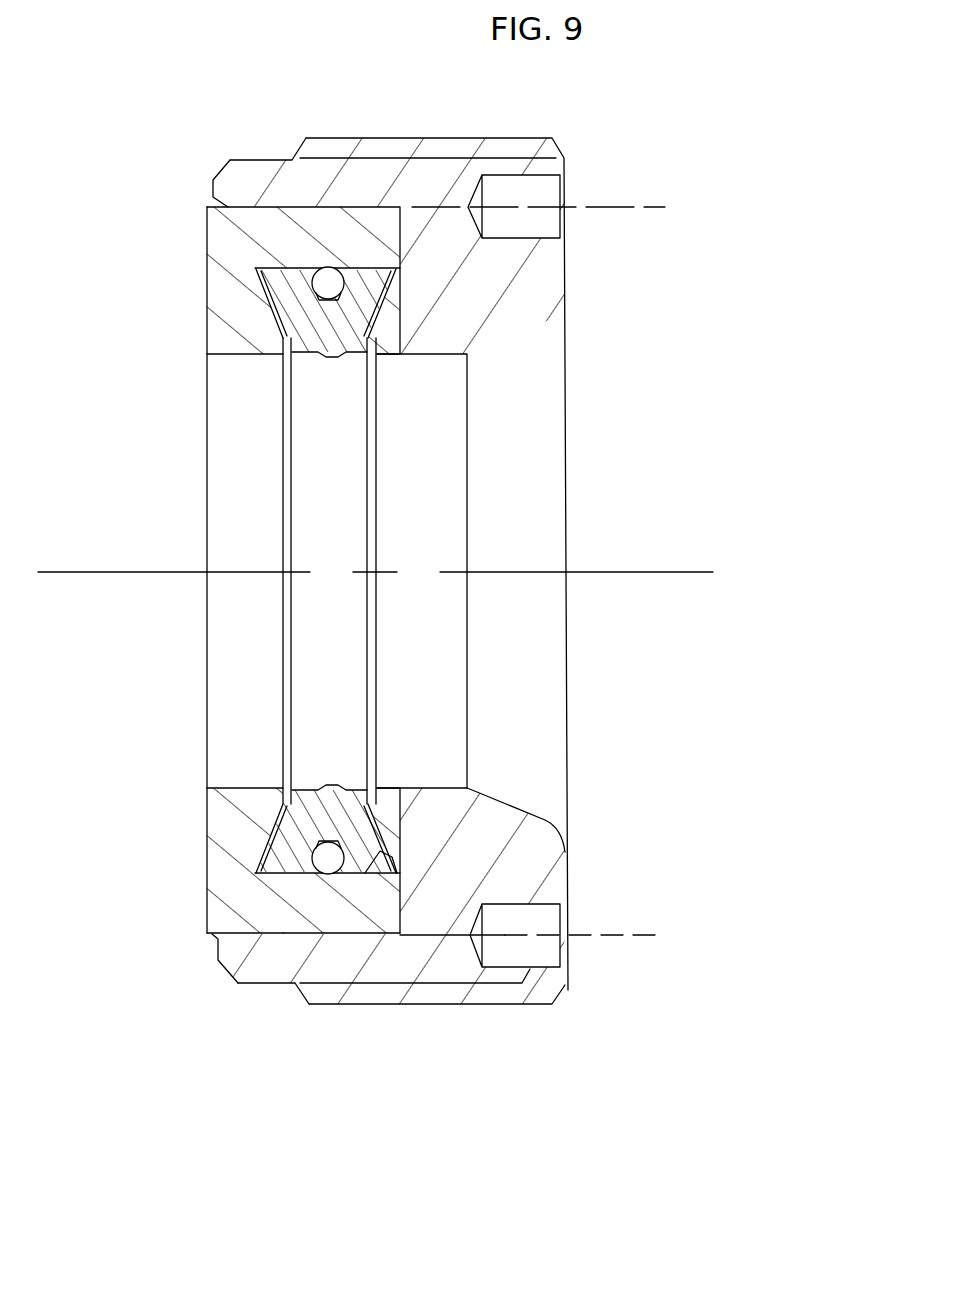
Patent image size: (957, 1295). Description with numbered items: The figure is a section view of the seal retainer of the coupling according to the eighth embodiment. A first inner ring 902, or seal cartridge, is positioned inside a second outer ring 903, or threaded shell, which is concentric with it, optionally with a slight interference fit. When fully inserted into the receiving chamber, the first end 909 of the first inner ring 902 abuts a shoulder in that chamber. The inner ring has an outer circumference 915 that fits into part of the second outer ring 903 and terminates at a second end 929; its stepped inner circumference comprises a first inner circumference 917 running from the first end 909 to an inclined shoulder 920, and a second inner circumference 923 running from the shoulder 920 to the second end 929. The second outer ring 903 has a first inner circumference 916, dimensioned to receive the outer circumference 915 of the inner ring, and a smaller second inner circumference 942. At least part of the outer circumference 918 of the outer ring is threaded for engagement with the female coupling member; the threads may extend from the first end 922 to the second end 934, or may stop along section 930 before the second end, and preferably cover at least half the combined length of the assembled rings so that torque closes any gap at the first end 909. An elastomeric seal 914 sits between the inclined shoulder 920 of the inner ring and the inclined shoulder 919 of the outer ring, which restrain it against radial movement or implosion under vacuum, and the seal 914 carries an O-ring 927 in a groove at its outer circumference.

The first inner ring 902 is at (338, 903).
The second outer ring 903 is at (440, 905).
The first end 909 is at (208, 852).
The elastomeric seal 914 is at (372, 790).
The outer circumference 915 is at (280, 935).
The first inner circumference 916 is at (320, 937).
The first inner circumference 917 is at (233, 788).
The outer circumference 918 is at (487, 1002).
The inclined shoulder 919 is at (383, 852).
The inclined shoulder 920 is at (340, 802).
The first end 922 is at (567, 914).
The second inner circumference 923 is at (400, 880).
The O-ring 927 is at (340, 850).
The second end 929 is at (405, 883).
The section 930 is at (253, 963).
The second end 934 is at (220, 956).
The second inner circumference 942 is at (423, 790).